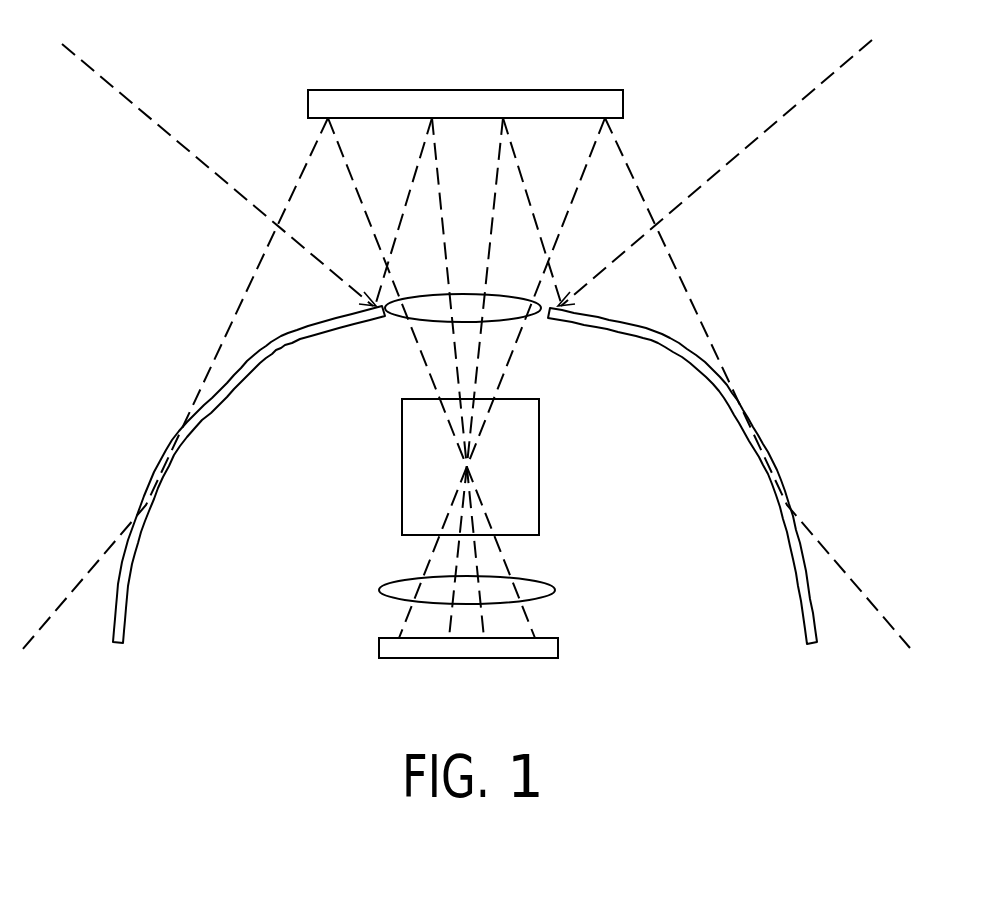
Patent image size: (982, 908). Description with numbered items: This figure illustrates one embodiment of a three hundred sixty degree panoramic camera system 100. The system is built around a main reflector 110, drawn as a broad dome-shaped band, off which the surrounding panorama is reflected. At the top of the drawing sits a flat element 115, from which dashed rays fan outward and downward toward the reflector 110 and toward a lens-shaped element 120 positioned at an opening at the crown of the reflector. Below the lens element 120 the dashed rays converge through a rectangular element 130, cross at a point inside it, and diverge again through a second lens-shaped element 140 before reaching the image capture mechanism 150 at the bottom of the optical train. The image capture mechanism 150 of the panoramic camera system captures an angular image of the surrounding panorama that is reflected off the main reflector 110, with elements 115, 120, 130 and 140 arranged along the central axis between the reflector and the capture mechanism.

The illumination/imaging system 100 is at (802, 262).
The main reflector 110 is at (775, 468).
The light source 115 is at (548, 88).
The first lens 120 is at (393, 321).
The aperture/stop housing 130 is at (541, 460).
The second lens 140 is at (556, 590).
The image capture mechanism 150 is at (559, 648).